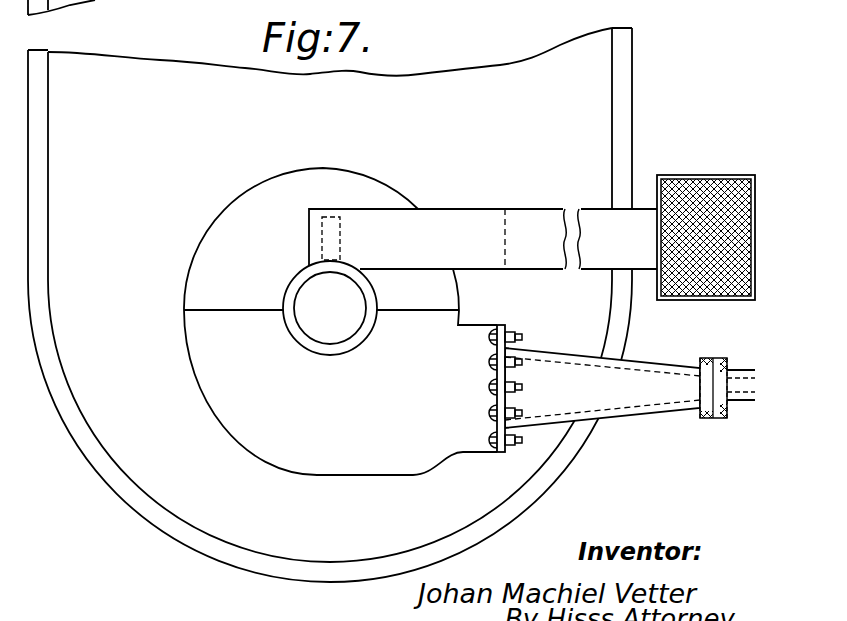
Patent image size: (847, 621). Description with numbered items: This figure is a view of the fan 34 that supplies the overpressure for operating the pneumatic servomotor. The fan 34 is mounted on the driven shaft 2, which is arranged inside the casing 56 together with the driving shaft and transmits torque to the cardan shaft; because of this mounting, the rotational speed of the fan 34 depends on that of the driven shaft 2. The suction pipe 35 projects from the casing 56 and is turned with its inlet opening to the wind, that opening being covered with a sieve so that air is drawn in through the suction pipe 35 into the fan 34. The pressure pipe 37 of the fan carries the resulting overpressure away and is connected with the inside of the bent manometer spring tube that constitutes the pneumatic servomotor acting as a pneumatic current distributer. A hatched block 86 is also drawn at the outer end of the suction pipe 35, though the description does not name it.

The driven shaft 2 is at (330, 310).
The fan 34 is at (226, 403).
The suction pipe 35 is at (595, 221).
The pressure pipe 37 is at (620, 390).
The casing 56 is at (268, 562).
The counterweight block 86 is at (706, 193).